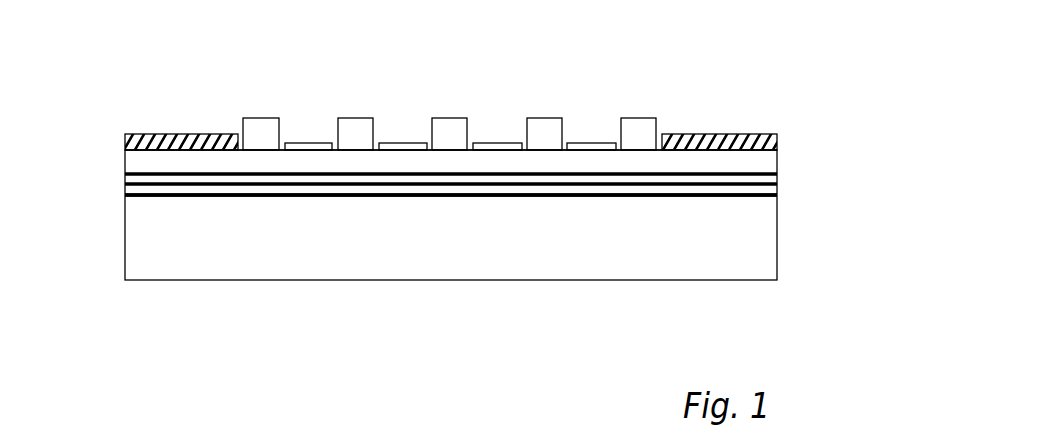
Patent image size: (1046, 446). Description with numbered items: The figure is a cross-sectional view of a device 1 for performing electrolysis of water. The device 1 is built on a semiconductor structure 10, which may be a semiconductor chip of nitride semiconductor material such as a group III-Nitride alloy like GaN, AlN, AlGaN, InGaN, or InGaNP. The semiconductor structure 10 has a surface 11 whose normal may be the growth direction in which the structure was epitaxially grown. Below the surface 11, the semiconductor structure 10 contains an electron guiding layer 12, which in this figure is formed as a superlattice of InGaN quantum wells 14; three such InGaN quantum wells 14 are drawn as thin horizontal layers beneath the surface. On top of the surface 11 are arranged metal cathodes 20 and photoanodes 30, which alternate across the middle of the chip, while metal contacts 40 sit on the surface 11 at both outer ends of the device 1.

The device 1 is at (160, 78).
The semiconductor structure 10 is at (103, 249).
The surface 11 is at (136, 160).
The electron guiding layer 12 is at (788, 172).
The InGaN quantum wells 14 is at (763, 211).
The metal cathodes 20 is at (547, 118).
The photoanodes 30 is at (500, 141).
The metal contacts 40 is at (708, 134).